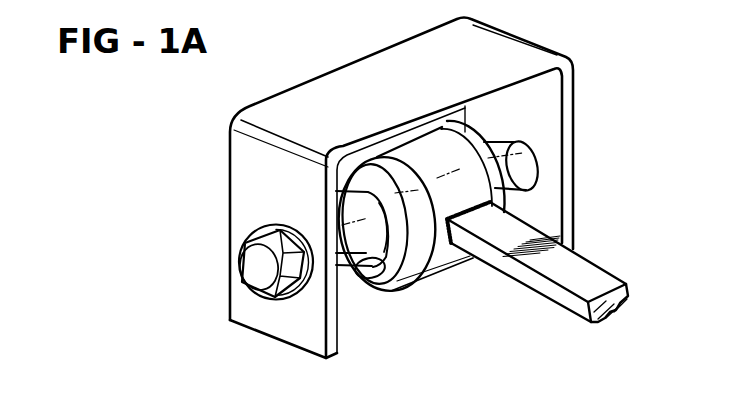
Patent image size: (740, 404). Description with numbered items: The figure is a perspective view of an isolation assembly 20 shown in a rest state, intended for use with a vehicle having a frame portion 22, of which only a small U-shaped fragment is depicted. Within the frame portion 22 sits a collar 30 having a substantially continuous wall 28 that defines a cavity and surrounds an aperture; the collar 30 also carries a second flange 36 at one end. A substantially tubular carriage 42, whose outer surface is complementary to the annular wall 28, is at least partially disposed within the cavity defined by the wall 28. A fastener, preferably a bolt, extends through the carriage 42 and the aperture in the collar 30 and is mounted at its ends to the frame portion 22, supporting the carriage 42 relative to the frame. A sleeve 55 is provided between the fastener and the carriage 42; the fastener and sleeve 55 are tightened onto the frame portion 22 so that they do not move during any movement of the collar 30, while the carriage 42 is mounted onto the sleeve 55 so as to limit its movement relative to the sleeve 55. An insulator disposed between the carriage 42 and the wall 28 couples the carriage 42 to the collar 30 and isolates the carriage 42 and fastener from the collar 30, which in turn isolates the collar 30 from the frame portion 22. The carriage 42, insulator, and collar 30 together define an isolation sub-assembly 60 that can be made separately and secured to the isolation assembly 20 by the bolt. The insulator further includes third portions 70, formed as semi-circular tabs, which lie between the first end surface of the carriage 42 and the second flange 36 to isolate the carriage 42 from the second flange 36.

The isolation assembly 20 is at (214, 244).
The frame portion 22 is at (390, 98).
The continuous wall 28 is at (483, 132).
The collar 30 is at (405, 236).
The second flange 36 is at (363, 285).
The carriage 42 is at (388, 248).
The sleeve 55 is at (528, 170).
The isolation sub-assembly 60 is at (517, 212).
The third portions 70 is at (352, 206).